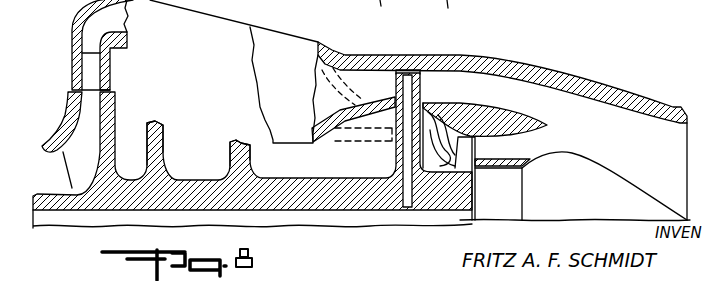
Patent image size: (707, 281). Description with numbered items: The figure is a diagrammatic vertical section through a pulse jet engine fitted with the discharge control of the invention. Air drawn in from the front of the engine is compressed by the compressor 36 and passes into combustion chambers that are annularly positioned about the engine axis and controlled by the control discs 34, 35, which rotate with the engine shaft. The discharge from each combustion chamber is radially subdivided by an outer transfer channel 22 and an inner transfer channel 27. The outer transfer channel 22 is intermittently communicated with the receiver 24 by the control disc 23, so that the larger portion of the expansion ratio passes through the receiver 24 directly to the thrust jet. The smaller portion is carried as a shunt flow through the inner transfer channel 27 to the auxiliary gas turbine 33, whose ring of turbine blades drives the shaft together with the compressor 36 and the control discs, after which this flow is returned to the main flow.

The outer transfer channel 22 is at (372, 68).
The control disc 23 is at (392, 143).
The receiver 24 is at (437, 88).
The inner transfer channel 27 is at (377, 127).
The auxiliary gas turbine 33 is at (466, 147).
The control disc 34 is at (163, 150).
The control disc 35 is at (250, 157).
The compressor 36 is at (60, 155).